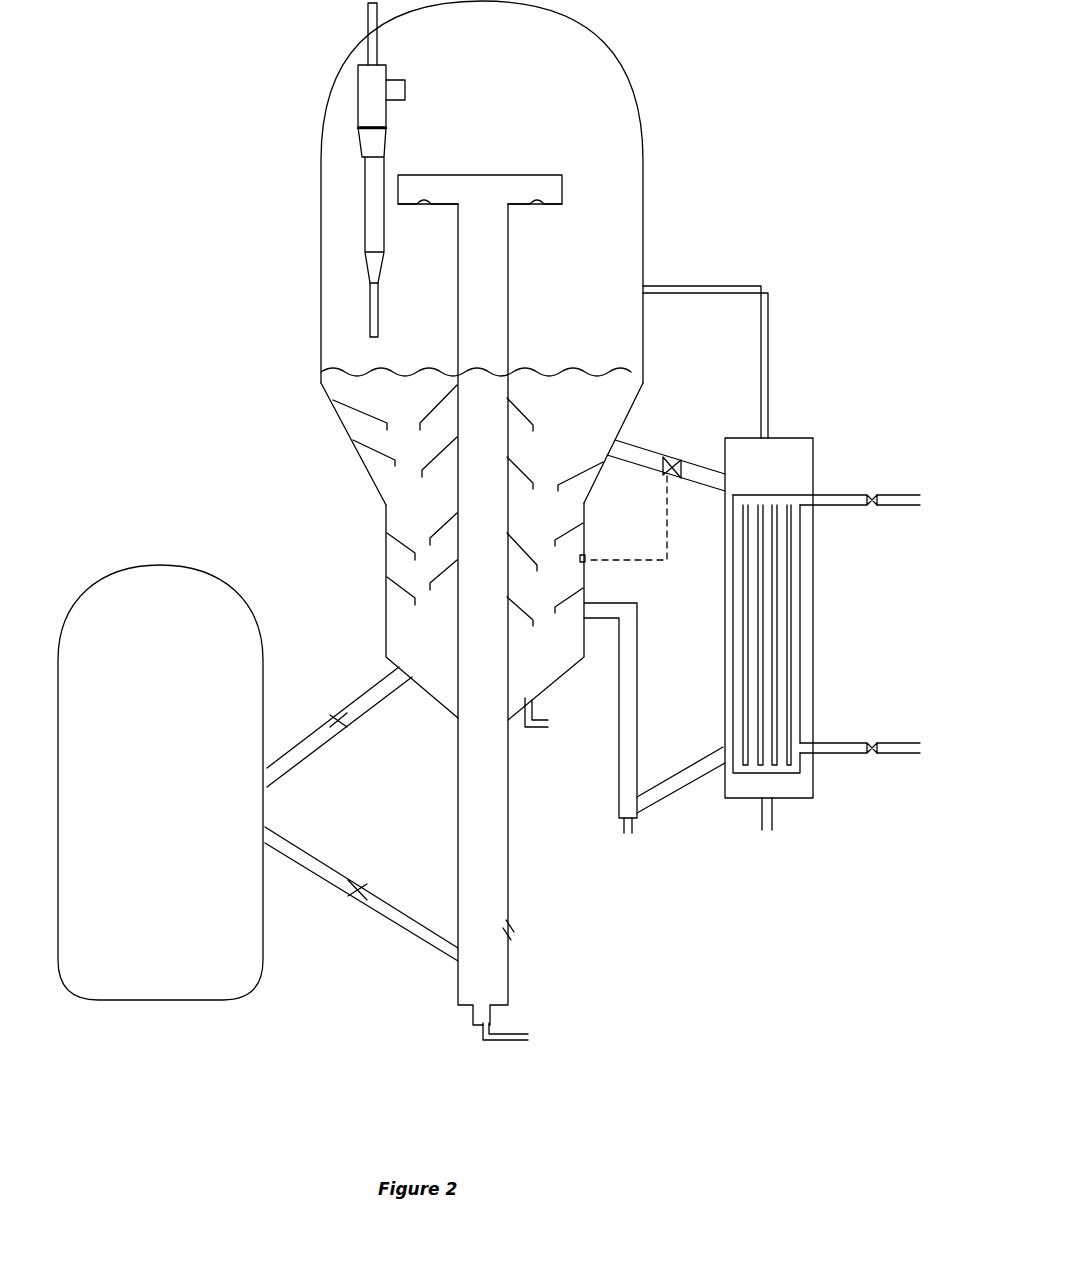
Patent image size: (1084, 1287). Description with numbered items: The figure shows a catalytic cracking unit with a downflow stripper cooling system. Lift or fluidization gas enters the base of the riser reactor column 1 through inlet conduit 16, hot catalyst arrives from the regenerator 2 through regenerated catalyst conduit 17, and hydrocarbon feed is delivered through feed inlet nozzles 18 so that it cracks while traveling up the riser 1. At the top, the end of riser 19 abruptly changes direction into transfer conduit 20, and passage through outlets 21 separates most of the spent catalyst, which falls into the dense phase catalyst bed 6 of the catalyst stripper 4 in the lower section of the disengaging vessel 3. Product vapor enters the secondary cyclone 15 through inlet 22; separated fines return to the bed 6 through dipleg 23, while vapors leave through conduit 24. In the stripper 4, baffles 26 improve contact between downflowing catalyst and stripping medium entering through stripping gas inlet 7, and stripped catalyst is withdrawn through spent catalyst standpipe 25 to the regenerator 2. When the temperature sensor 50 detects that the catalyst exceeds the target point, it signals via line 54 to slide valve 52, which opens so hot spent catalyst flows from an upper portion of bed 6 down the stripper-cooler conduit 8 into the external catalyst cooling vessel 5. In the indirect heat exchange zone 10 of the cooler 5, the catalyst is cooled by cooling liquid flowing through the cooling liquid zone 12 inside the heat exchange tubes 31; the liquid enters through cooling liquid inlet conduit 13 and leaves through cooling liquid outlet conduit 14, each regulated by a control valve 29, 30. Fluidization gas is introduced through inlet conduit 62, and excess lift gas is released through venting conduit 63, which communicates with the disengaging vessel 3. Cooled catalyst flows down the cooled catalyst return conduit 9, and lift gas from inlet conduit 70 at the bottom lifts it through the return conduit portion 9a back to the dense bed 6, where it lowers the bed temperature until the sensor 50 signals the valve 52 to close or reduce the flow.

The riser reactor column 1 is at (518, 857).
The regenerator 2 is at (152, 1008).
The disengaging vessel 3 is at (631, 42).
The catalyst stripper 4 is at (345, 491).
The external catalyst cooling vessel 5 is at (823, 583).
The dense phase catalyst bed 6 is at (400, 508).
The stripping gas inlet 7 is at (552, 727).
The stripper-cooler conduit 8 is at (633, 443).
The cooled catalyst return conduit 9 is at (700, 763).
The cooled catalyst return conduit portion 9a is at (640, 681).
The indirect heat exchange zone 10 is at (794, 460).
The cooling liquid zone 12 is at (800, 763).
The cooling liquid inlet conduit 13 is at (924, 498).
The cooling liquid outlet conduit 14 is at (928, 750).
The secondary cyclone 15 is at (345, 127).
The inlet conduit 16 is at (535, 1036).
The regenerated catalyst conduit 17 is at (380, 923).
The feed inlet nozzles 18 is at (518, 936).
The end of riser 19 is at (487, 172).
The transfer conduit 20 is at (540, 182).
The outlets 21 is at (543, 205).
The cyclone inlet 22 is at (407, 91).
The dipleg 23 is at (382, 310).
The vapor outlet conduit 24 is at (369, 21).
The spent catalyst standpipe 25 is at (362, 716).
The baffles 26 is at (355, 413).
The control valve 29 is at (870, 483).
The control valve 30 is at (872, 735).
The heat exchange tubes 31 is at (698, 599).
The temperature sensor 50 is at (585, 556).
The slide valve 52 is at (668, 456).
The signal line 54 is at (672, 512).
The inlet conduit 62 is at (767, 838).
The venting conduit 63 is at (776, 314).
The inlet conduit 70 is at (628, 838).